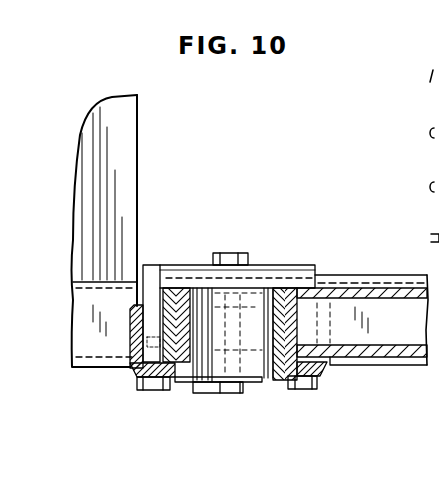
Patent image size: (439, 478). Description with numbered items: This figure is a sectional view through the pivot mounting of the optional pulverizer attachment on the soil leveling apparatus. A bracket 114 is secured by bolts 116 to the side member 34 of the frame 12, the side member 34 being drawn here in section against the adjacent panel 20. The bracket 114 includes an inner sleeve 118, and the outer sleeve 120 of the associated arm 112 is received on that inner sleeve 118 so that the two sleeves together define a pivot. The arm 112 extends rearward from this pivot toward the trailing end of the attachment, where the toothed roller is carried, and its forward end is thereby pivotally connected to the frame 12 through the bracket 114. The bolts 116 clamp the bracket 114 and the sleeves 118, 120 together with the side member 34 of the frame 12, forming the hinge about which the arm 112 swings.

The side panel 20 is at (122, 170).
The side member 34 is at (93, 370).
The outer sleeve 120 is at (170, 300).
The bracket 114 is at (132, 377).
The inner sleeve 118 is at (262, 384).
The bolt 116 is at (240, 254).
The frame 12 is at (365, 277).
The arm 112 is at (400, 366).